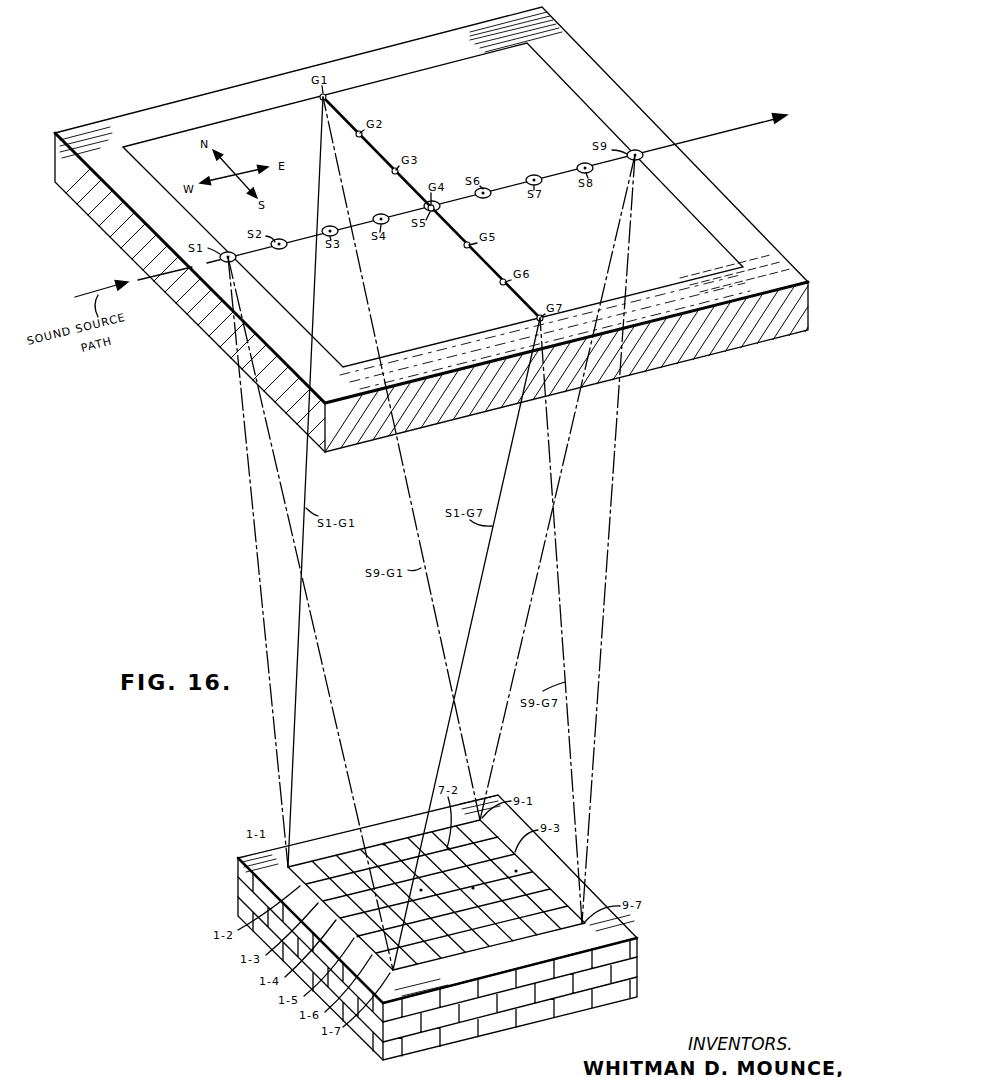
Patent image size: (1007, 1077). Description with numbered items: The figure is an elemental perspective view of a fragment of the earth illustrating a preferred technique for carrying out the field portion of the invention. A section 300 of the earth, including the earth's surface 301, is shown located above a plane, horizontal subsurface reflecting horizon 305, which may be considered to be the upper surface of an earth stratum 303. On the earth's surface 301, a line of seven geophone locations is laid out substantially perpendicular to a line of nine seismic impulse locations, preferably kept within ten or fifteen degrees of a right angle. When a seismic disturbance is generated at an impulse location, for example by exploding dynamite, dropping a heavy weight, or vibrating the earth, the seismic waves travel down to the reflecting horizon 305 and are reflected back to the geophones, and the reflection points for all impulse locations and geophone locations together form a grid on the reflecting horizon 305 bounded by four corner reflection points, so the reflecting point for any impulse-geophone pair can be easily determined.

The section of the earth 300 is at (237, 91).
The earth's surface 301 is at (612, 102).
The earth stratum 303 is at (227, 893).
The subsurface reflecting horizon 305 is at (618, 890).